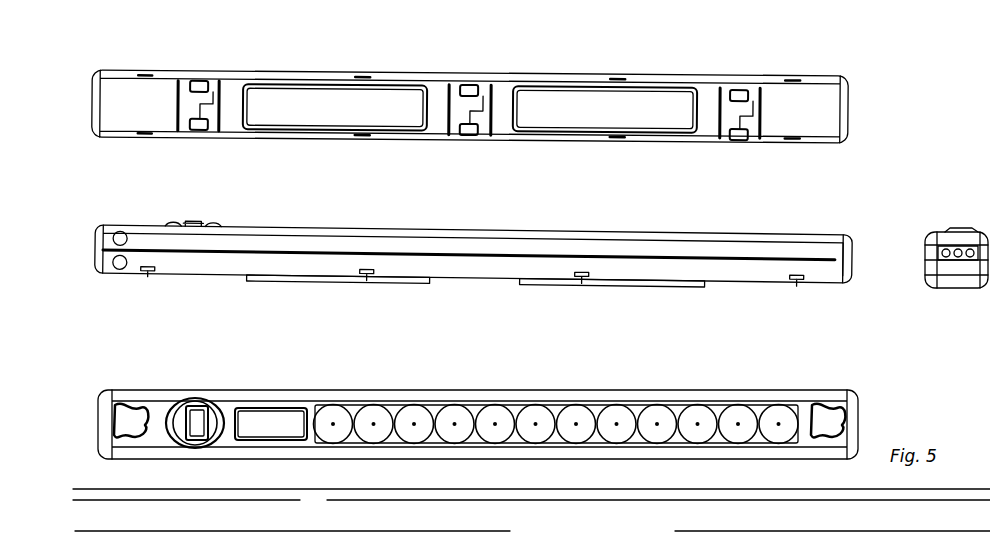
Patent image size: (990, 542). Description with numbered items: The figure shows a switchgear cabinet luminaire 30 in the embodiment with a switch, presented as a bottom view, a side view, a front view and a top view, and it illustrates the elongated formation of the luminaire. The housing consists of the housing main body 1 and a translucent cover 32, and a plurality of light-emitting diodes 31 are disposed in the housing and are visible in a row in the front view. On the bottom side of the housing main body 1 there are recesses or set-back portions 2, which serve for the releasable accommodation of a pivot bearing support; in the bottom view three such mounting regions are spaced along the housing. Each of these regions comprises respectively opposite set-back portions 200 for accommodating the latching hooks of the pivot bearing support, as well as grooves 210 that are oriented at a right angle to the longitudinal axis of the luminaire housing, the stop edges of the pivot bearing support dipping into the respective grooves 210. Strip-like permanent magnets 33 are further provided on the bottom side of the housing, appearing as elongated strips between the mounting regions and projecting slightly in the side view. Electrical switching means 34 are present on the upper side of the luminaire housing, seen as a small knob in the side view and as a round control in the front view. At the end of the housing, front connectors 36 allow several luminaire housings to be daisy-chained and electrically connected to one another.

The housing main body 1 is at (838, 278).
The recesses or set-back portions 2 is at (218, 80).
The switchgear cabinet luminaire 30 is at (133, 70).
The light-emitting diodes 31 is at (381, 405).
The translucent cover 32 is at (793, 243).
The strip-like permanent magnets 33 is at (388, 113).
The electrical switching means 34 is at (193, 220).
The front connectors 36 is at (942, 253).
The set-back portions 200 is at (468, 82).
The grooves 210 is at (182, 133).